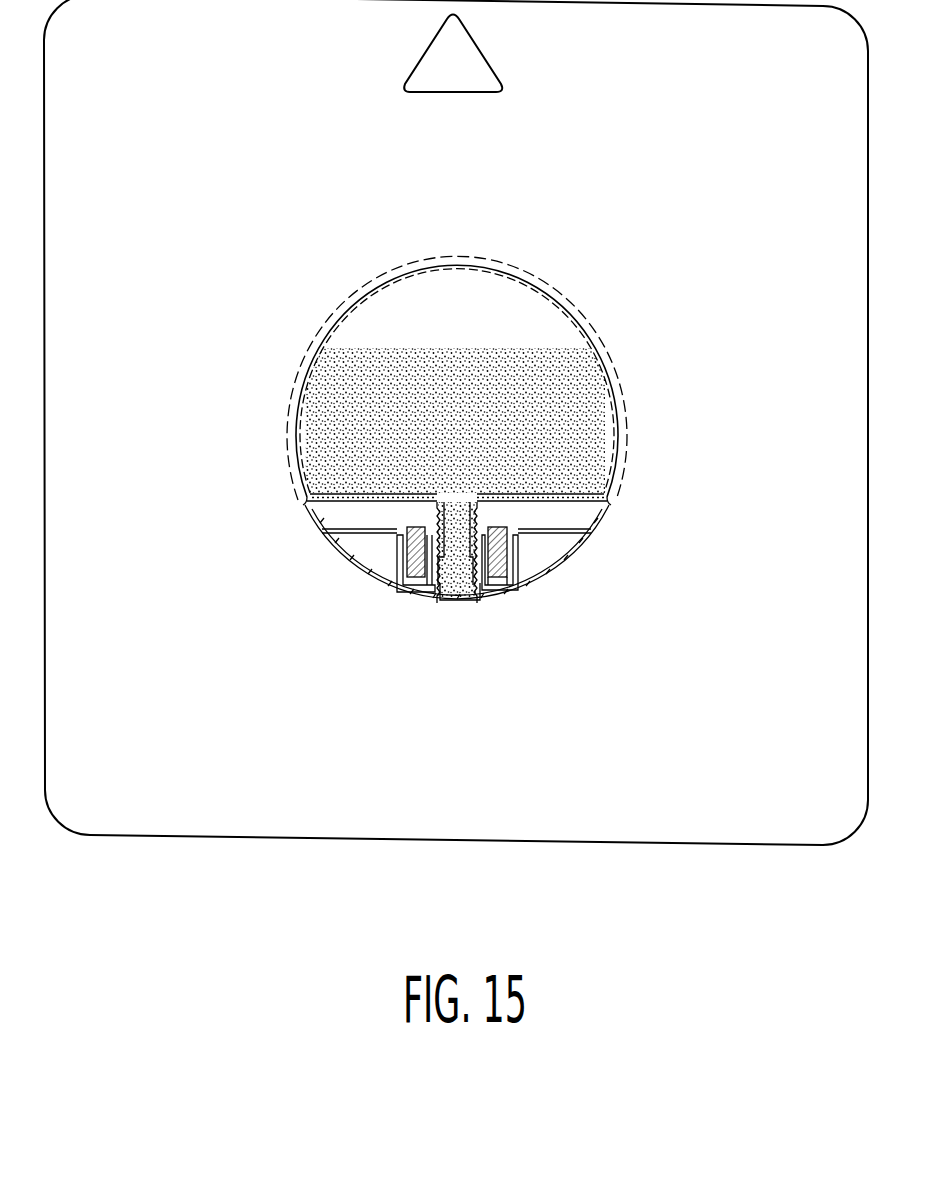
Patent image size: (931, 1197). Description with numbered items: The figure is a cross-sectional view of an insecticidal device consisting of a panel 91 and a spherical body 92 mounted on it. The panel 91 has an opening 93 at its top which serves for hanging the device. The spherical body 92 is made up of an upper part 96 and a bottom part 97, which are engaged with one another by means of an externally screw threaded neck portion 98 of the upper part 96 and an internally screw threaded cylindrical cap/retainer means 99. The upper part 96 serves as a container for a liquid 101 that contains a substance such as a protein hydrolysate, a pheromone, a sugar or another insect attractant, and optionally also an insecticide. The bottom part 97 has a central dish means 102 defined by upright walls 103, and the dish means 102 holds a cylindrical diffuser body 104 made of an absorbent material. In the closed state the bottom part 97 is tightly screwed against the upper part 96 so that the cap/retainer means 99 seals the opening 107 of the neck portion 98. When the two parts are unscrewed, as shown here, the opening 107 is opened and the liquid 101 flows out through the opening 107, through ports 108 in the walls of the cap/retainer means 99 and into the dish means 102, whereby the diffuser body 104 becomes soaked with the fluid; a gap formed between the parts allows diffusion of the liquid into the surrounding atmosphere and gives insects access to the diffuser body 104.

The panel 91 is at (813, 835).
The spherical body 92 is at (622, 387).
The opening 93 is at (473, 72).
The upper part 96 is at (557, 302).
The bottom part 97 is at (567, 568).
The neck portion 98 is at (417, 545).
The cap/retainer means 99 is at (450, 570).
The liquid 101 is at (577, 455).
The dish means 102 is at (503, 585).
The upright walls 103 is at (520, 570).
The diffuser body 104 is at (495, 524).
The opening 107 is at (462, 545).
The ports 108 is at (505, 531).